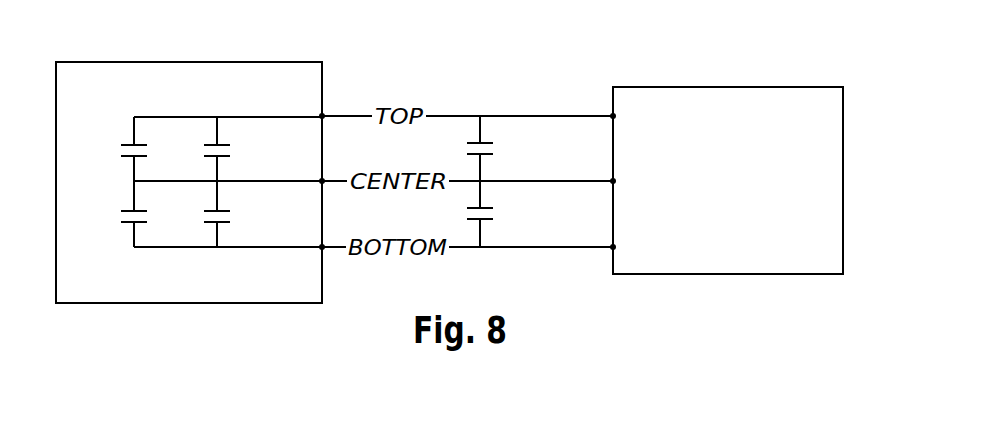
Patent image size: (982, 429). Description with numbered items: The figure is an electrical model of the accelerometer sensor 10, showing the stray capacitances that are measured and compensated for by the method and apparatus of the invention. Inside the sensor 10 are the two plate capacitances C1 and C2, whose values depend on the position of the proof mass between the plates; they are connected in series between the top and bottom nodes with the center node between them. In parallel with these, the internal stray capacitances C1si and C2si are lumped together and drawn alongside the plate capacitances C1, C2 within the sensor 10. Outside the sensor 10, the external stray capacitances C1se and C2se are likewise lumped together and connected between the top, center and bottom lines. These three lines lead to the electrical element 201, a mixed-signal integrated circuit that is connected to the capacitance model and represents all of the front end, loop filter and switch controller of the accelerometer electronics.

The sensor 10 is at (203, 161).
The electrical element 201 is at (787, 107).
The plate capacitance C1 is at (117, 149).
The plate capacitance C2 is at (117, 217).
The internal stray capacitance C1si is at (245, 149).
The internal stray capacitance C2si is at (245, 217).
The external stray capacitance C1se is at (511, 150).
The external stray capacitance C2se is at (511, 215).